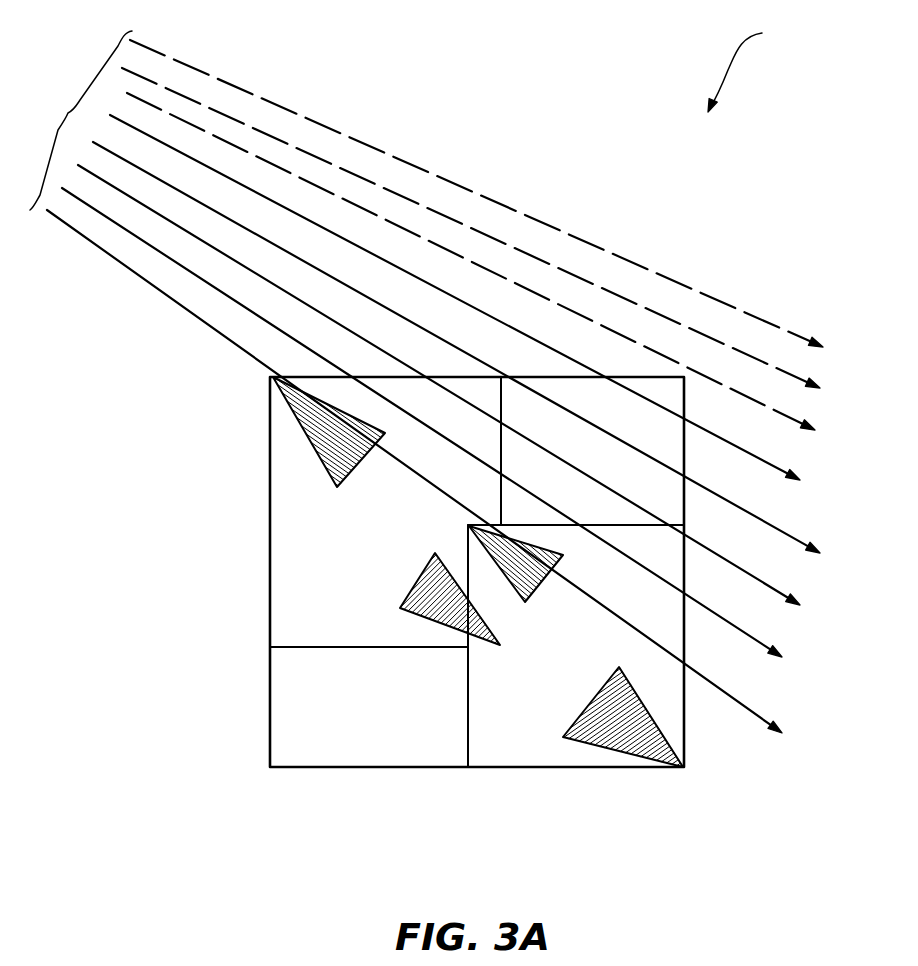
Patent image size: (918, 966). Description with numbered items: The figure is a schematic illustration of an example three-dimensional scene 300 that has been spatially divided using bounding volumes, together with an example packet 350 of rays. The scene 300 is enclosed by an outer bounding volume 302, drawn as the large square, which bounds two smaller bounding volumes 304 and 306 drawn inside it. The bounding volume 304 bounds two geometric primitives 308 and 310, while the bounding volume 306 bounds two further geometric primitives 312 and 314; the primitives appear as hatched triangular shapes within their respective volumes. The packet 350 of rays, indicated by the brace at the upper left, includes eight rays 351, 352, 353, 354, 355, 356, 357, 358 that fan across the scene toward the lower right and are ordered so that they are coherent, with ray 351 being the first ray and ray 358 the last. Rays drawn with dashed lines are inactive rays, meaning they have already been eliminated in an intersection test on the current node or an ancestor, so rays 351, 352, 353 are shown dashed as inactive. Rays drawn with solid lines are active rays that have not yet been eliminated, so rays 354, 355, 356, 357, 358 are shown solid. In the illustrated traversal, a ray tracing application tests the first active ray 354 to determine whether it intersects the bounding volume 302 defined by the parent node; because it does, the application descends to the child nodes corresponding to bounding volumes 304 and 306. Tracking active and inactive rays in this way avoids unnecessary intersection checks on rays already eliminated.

The three-dimensional scene 300 is at (757, 67).
The bounding volume 302 is at (686, 452).
The bounding volume 304 is at (501, 452).
The bounding volume 306 is at (468, 703).
The geometric primitive 308 is at (372, 470).
The geometric primitive 310 is at (417, 582).
The geometric primitive 312 is at (548, 574).
The geometric primitive 314 is at (590, 700).
The packet of rays 350 is at (78, 120).
The ray 351 is at (503, 201).
The ray 352 is at (497, 235).
The ray 353 is at (496, 269).
The ray 354 is at (481, 305).
The ray 355 is at (480, 356).
The ray 356 is at (464, 394).
The ray 357 is at (446, 431).
The ray 358 is at (440, 480).